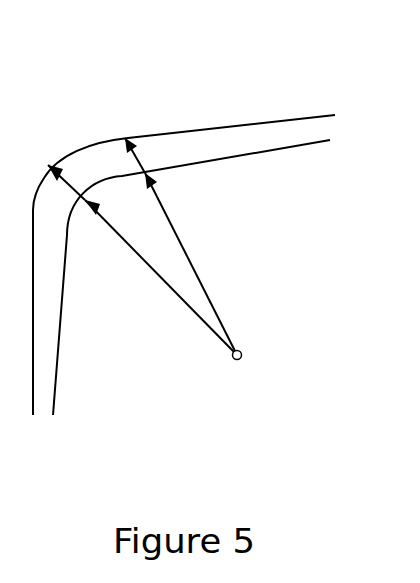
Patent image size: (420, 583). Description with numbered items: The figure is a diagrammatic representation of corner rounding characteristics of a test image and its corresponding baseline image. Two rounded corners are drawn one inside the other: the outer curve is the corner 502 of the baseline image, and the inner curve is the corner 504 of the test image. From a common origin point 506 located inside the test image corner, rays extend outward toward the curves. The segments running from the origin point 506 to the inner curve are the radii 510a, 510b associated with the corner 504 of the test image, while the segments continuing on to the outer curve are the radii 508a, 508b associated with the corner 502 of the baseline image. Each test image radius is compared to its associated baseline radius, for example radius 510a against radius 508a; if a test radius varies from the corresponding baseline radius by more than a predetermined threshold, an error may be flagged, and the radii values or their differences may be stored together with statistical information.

The corner of the baseline image 502 is at (242, 125).
The corner of the test image 504 is at (242, 158).
The light source point 506 is at (242, 357).
The radius of the baseline image 508a is at (77, 192).
The radius of the baseline image 508b is at (140, 163).
The radius of the test image 510a is at (163, 283).
The radius of the test image 510b is at (205, 271).